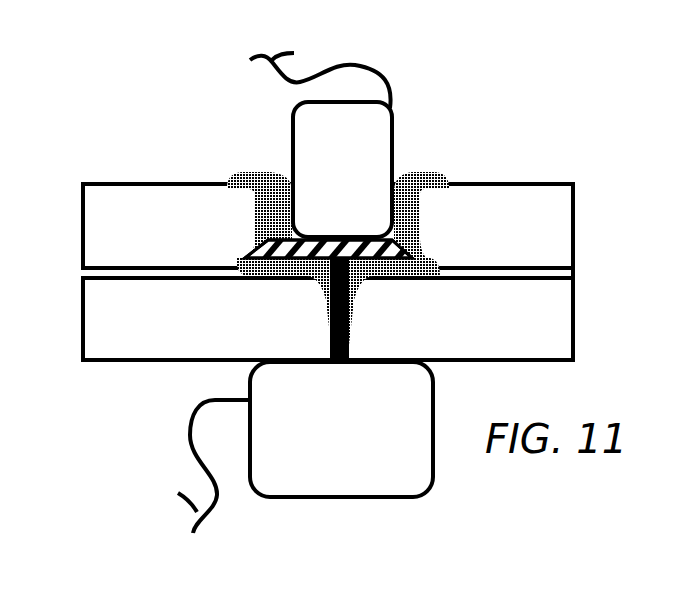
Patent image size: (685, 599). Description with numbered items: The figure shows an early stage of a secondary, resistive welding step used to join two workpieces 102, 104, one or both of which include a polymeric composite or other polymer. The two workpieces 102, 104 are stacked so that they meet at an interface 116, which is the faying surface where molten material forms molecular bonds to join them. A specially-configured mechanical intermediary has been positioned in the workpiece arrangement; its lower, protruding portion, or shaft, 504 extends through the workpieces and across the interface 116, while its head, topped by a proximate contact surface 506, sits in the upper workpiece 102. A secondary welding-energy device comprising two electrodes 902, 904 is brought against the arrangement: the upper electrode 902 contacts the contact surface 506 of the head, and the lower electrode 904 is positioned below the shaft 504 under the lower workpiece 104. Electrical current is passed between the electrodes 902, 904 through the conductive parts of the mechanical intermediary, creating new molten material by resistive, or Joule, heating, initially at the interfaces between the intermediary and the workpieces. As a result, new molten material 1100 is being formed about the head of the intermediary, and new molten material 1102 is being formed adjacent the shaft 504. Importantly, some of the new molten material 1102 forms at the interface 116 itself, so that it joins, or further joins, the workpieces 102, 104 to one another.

The workpiece 102 is at (532, 248).
The workpiece 104 is at (167, 343).
The interface 116 is at (590, 274).
The protruding portion 504 is at (352, 345).
The proximate contact surface 506 is at (320, 234).
The electrode 902 is at (372, 177).
The electrode 904 is at (373, 438).
The new molten material 1100 is at (252, 236).
The new molten material 1102 is at (323, 306).